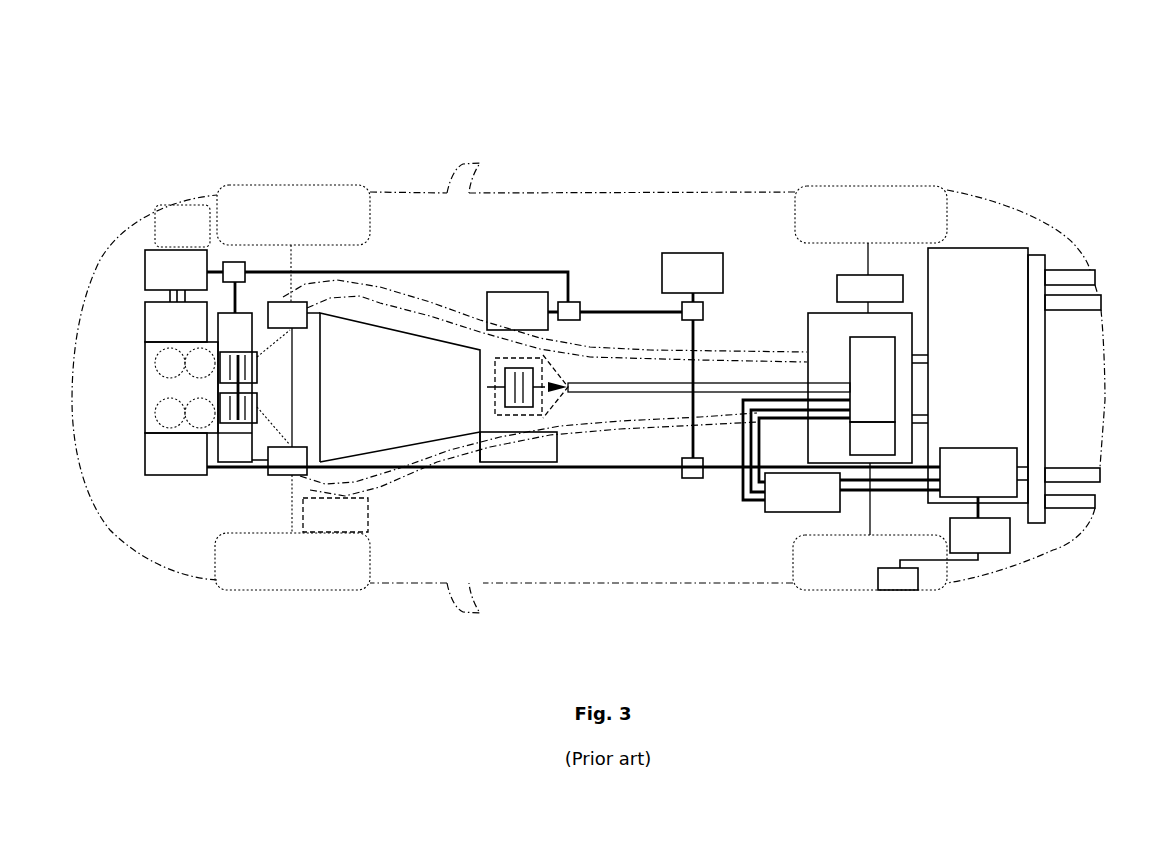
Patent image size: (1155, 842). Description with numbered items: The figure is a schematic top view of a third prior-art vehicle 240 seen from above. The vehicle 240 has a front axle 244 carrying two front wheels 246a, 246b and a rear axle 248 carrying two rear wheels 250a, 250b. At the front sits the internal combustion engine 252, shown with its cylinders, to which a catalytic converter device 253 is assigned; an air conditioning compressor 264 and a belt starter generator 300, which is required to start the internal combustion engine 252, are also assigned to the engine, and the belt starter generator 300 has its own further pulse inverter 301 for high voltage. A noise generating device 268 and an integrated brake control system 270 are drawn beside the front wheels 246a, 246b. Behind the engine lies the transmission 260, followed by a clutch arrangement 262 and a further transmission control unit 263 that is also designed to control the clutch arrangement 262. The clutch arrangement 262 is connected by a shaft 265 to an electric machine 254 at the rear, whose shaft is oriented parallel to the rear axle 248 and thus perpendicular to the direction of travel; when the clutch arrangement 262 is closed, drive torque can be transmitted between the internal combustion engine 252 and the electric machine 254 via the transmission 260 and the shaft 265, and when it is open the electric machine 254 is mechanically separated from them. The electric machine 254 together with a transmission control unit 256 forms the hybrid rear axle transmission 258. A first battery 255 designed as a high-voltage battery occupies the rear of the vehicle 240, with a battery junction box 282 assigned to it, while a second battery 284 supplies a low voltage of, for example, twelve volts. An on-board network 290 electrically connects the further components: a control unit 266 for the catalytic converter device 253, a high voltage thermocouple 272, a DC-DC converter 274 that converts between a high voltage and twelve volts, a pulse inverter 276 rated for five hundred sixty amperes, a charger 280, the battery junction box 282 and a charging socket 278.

The vehicle 240 is at (1076, 144).
The front axle 244 is at (258, 497).
The front wheel 246a is at (293, 215).
The front wheel 246b is at (292, 561).
The rear axle 248 is at (840, 517).
The rear wheel 250a is at (871, 214).
The rear wheel 250b is at (870, 562).
The internal combustion engine 252 is at (145, 381).
The catalytic converter device 253 is at (288, 377).
The electric machine 254 is at (872, 379).
The first battery 255 is at (1014, 385).
The transmission control unit 256 is at (872, 438).
The hybrid rear axle transmission 258 is at (806, 337).
The transmission 260 is at (545, 388).
The clutch arrangement 262 is at (590, 384).
The further transmission control unit 263 is at (518, 452).
The air conditioning compressor 264 is at (176, 454).
The shaft 265 is at (573, 456).
The control unit 266 is at (283, 308).
The noise generating device 268 is at (182, 226).
The integrated brake control system 270 is at (335, 515).
The high voltage thermocouple 272 is at (584, 311).
The DC-DC converter 274 is at (692, 365).
The pulse inverter 276 is at (802, 492).
The charging socket 278 is at (900, 592).
The charger 280 is at (955, 532).
The battery junction box 282 is at (984, 472).
The second battery 284 is at (853, 290).
The on-board network 290 is at (598, 512).
The belt starter generator 300 is at (176, 316).
The further pulse inverter 301 is at (176, 270).